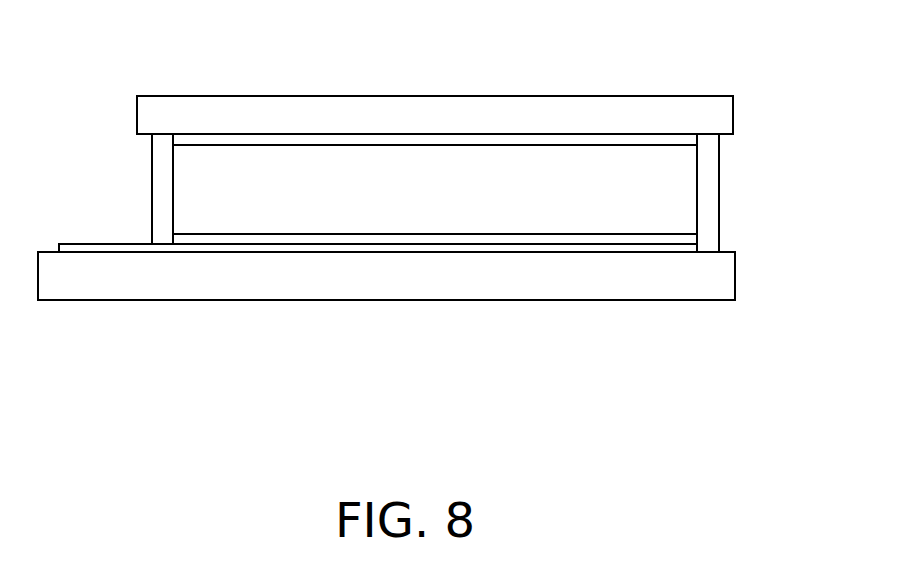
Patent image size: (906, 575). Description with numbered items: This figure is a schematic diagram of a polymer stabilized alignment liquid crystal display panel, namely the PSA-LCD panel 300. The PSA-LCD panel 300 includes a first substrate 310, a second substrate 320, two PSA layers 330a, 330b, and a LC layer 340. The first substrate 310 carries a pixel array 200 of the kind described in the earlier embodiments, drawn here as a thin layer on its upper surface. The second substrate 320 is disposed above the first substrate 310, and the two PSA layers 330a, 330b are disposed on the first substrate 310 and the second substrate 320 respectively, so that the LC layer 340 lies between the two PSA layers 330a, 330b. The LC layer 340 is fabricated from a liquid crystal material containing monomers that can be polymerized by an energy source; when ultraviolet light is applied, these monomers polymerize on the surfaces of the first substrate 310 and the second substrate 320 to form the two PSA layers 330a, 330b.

The PSA-LCD panel 300 is at (425, 230).
The first substrate 310 is at (727, 277).
The second substrate 320 is at (727, 118).
The PSA layer 330a is at (597, 240).
The PSA layer 330b is at (413, 141).
The LC layer 340 is at (480, 202).
The pixel array 200 is at (276, 245).